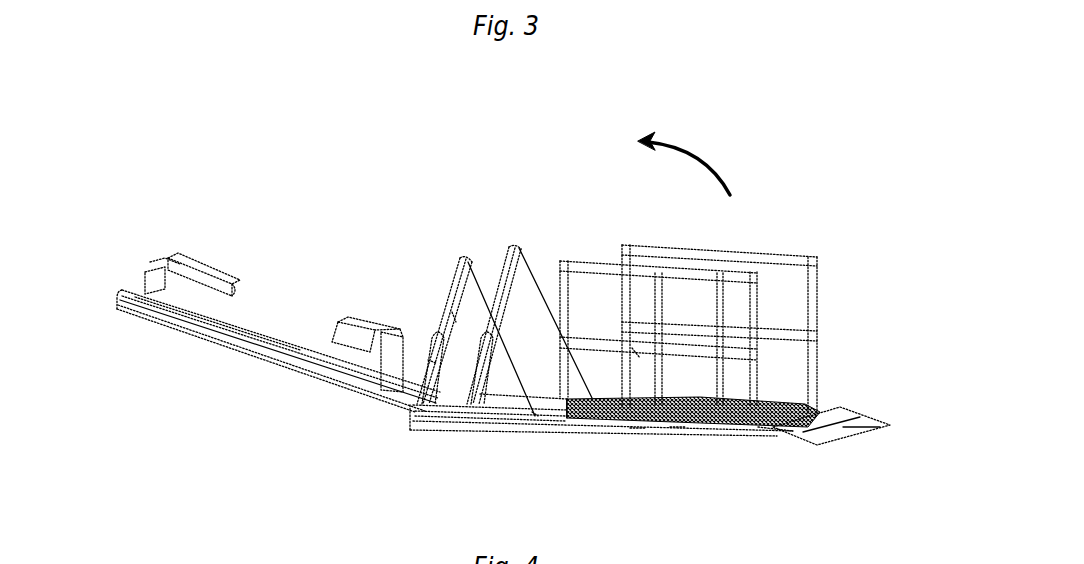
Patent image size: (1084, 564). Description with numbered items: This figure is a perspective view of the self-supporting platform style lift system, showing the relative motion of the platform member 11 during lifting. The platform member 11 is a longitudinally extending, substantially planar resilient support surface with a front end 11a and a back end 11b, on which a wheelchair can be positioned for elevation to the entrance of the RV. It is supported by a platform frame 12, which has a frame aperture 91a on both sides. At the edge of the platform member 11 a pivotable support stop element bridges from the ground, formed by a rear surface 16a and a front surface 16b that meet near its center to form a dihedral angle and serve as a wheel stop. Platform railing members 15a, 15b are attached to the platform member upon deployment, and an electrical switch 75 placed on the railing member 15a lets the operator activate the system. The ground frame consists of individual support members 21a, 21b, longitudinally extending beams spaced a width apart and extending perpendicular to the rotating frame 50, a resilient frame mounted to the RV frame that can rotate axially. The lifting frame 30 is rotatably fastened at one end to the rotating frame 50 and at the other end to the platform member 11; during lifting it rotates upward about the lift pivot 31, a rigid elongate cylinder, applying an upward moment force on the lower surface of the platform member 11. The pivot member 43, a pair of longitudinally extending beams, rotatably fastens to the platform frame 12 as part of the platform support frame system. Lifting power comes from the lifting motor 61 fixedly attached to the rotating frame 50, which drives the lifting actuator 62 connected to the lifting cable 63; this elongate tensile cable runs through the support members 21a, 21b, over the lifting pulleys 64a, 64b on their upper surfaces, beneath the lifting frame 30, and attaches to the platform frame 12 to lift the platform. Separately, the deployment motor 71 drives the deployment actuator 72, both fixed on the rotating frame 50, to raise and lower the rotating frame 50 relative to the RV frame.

The platform member 11 is at (696, 398).
The front end 11a is at (578, 398).
The back end 11b is at (758, 427).
The platform frame 12 is at (775, 427).
The platform railing member 15a is at (752, 296).
The platform railing member 15b is at (823, 292).
The rear surface 16a is at (873, 428).
The front surface 16b is at (819, 406).
The individual support member 21a is at (430, 358).
The individual support member 21b is at (535, 418).
The lifting frame 30 is at (460, 412).
The lift pivot 31 is at (452, 313).
The pivot member 43 is at (637, 428).
The rotating frame 50 is at (188, 327).
The lifting motor 61 is at (350, 343).
The lifting actuator 62 is at (285, 345).
The lifting cable 63 is at (485, 283).
The lifting pulley 64a is at (466, 260).
The lifting pulley 64b is at (519, 249).
The deployment motor 71 is at (204, 280).
The deployment actuator 72 is at (262, 314).
The electrical switch 75 is at (643, 362).
The frame aperture 91a is at (677, 427).